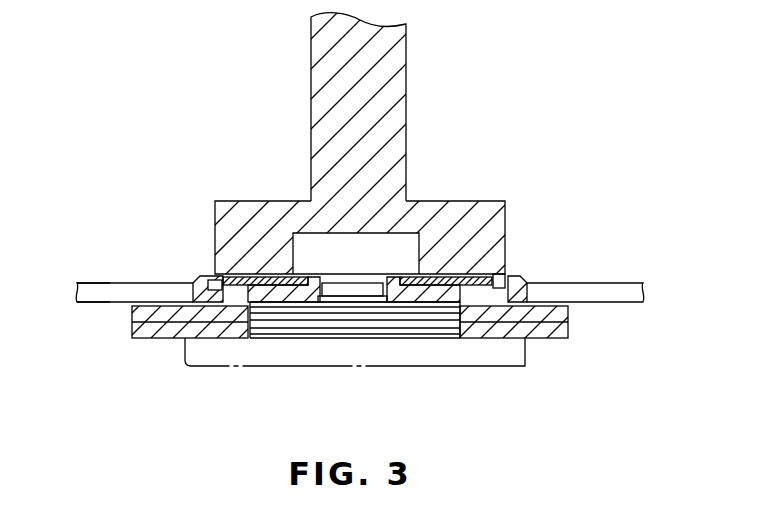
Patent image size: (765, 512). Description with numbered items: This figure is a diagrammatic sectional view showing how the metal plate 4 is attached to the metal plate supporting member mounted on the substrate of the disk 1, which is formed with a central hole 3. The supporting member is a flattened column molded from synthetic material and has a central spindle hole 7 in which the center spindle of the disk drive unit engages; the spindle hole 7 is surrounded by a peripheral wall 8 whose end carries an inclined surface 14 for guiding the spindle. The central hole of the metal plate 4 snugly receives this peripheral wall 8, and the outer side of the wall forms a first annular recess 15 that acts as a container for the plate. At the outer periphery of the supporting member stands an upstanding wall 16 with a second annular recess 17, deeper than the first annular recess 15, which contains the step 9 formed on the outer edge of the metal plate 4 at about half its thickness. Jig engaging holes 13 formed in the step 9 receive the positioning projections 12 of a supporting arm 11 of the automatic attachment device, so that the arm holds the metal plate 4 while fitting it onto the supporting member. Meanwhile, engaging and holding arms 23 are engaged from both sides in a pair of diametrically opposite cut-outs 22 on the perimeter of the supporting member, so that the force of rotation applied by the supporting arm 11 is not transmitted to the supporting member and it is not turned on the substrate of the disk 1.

The disk 1 is at (133, 340).
The central hole 3 is at (253, 330).
The metal plate 4 is at (280, 276).
The spindle hole 7 is at (333, 276).
The peripheral wall 8 is at (462, 276).
The step 9 is at (215, 283).
The supporting arm 11 is at (400, 100).
The positioning projections 12 is at (193, 283).
The jig engaging holes 13 is at (212, 278).
The inclined surface 14 is at (375, 276).
The first annular recess 15 is at (247, 268).
The upstanding wall 16 is at (517, 277).
The second annular recess 17 is at (190, 338).
The cut-outs 22 is at (163, 288).
The engaging and holding arms 23 is at (80, 283).